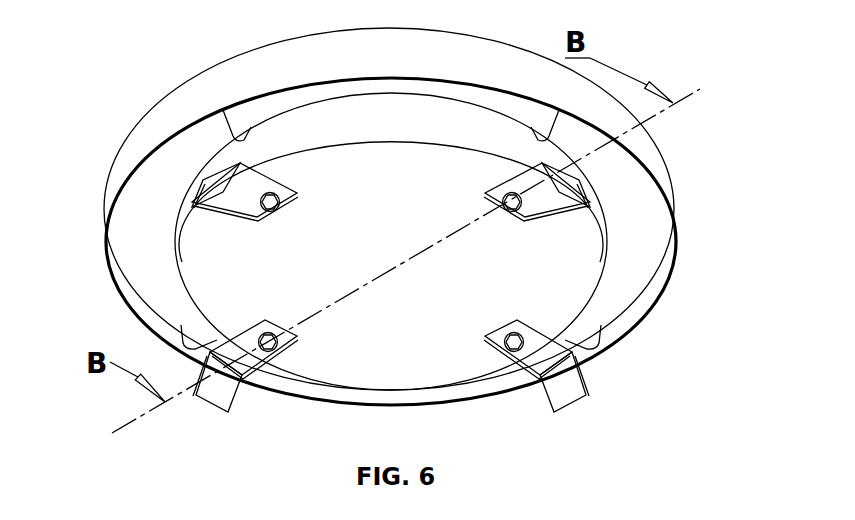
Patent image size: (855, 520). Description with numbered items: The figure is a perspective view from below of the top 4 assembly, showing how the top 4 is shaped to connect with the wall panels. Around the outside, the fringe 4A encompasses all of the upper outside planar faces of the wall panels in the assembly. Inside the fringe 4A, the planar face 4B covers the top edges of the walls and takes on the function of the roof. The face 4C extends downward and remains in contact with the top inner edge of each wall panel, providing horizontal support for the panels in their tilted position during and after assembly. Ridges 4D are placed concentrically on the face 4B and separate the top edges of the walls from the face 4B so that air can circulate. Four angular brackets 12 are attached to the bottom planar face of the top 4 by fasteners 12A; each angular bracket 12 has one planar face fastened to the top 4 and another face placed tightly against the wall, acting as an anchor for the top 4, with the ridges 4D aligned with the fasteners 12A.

The top 4 is at (375, 254).
The fringe 4A is at (113, 282).
The planar face 4B is at (140, 238).
The face 4C is at (180, 212).
The ridges 4D is at (223, 127).
The angular bracket 12 is at (568, 382).
The fastener 12A is at (507, 347).